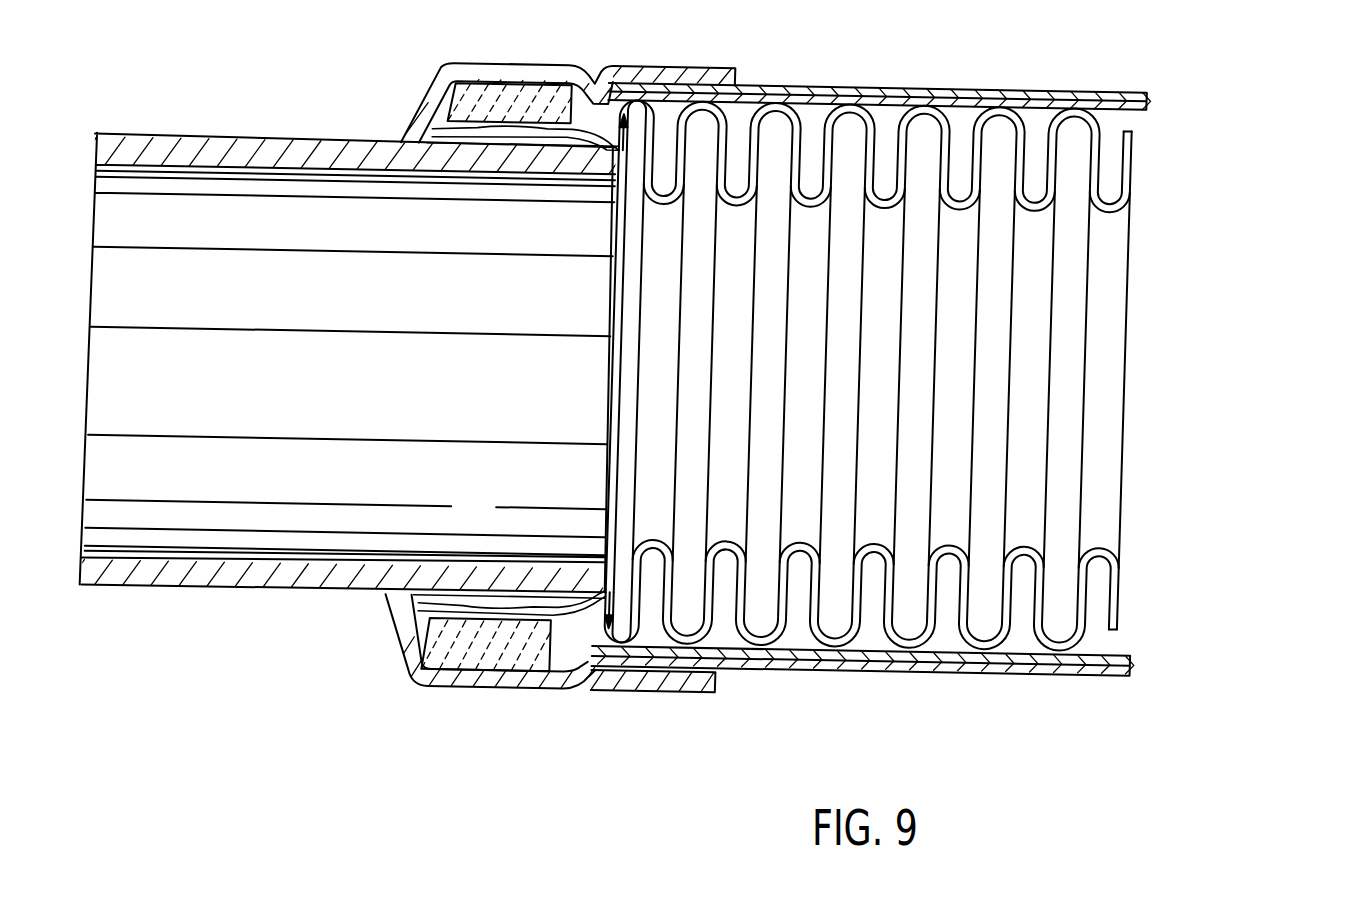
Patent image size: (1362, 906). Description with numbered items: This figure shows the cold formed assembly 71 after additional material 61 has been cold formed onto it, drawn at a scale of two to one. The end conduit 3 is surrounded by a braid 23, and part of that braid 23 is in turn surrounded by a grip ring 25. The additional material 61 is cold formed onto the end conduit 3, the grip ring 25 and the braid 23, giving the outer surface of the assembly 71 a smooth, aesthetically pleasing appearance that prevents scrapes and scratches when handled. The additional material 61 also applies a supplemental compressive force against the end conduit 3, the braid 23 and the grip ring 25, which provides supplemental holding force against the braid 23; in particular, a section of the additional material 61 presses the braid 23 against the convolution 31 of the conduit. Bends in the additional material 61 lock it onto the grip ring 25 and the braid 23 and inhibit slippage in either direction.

The end conduit 3 is at (393, 563).
The braid 23 is at (752, 676).
The grip ring 25 is at (515, 421).
The convolution 31 is at (607, 194).
The additional material 61 is at (487, 690).
The assembly 71 is at (592, 73).